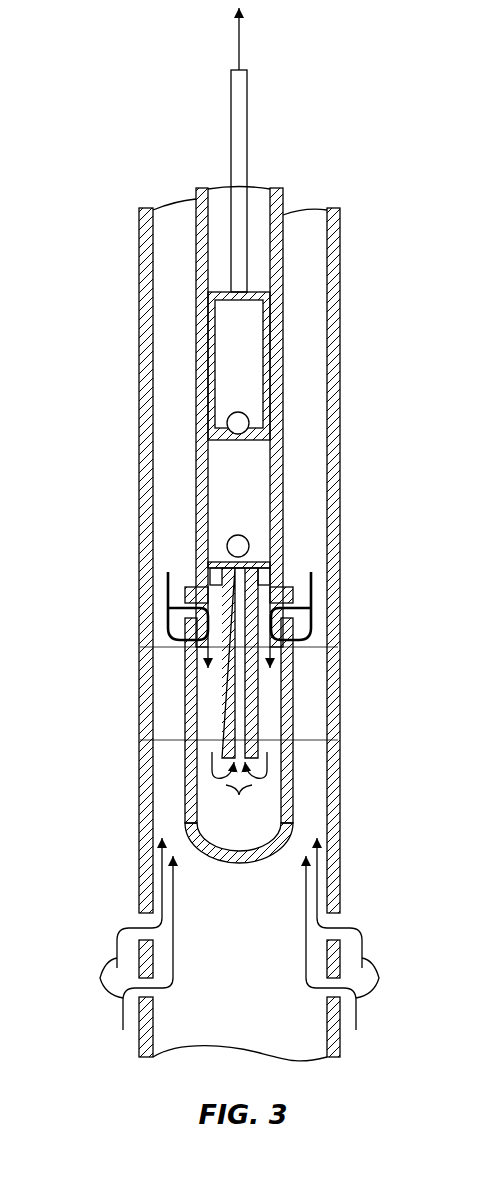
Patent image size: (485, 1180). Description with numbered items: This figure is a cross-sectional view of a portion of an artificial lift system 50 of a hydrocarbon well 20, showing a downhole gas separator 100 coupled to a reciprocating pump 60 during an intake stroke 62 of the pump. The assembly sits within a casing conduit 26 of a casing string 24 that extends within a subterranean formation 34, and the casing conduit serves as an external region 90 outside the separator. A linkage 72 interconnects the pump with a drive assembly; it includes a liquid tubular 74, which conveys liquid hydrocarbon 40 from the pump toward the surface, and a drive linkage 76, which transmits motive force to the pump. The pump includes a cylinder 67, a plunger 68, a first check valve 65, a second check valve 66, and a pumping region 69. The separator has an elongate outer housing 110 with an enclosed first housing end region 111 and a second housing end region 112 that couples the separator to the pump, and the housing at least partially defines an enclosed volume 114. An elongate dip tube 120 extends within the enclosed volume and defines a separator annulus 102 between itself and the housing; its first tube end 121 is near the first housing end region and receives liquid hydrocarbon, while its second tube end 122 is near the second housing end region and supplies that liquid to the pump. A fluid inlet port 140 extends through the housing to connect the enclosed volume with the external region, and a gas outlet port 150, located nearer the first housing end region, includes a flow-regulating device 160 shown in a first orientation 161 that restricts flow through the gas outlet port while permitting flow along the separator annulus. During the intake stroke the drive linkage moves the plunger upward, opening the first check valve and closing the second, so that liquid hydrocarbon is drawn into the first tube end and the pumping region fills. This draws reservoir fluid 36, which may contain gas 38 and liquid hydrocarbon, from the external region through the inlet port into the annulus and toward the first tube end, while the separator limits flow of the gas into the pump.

The hydrocarbon well 20 is at (80, 142).
The artificial lift system 50 is at (90, 192).
The intake stroke 62 is at (241, 41).
The drive linkage 76 is at (231, 137).
The liquid tubular 74 is at (192, 197).
The linkage 72 is at (185, 227).
The casing string 24 is at (138, 278).
The casing conduit 26 is at (170, 323).
The plunger 68 is at (255, 290).
The second check valve 66 is at (228, 417).
The reciprocating pump 60 is at (185, 423).
The cylinder 67 is at (266, 457).
The pumping region 69 is at (257, 494).
The first check valve 65 is at (228, 538).
The second housing end region 112 is at (212, 570).
The second tube end 122 is at (262, 577).
The reservoir fluid 36 is at (158, 573).
The gas 38 is at (166, 589).
The liquid hydrocarbon 40 is at (172, 618).
The fluid inlet port 140 is at (321, 613).
The separator annulus 102 is at (207, 675).
The flow-regulating device 160 is at (185, 698).
The first orientation 161 is at (177, 713).
The dip tube 120 is at (266, 685).
The gas outlet port 150 is at (303, 707).
The first tube end 121 is at (260, 740).
The outer housing 110 is at (303, 768).
The downhole gas separator 100 is at (108, 771).
The subterranean formation 34 is at (58, 843).
The external region 90 is at (229, 972).
The enclosed volume 114 is at (233, 829).
The first housing end region 111 is at (267, 848).